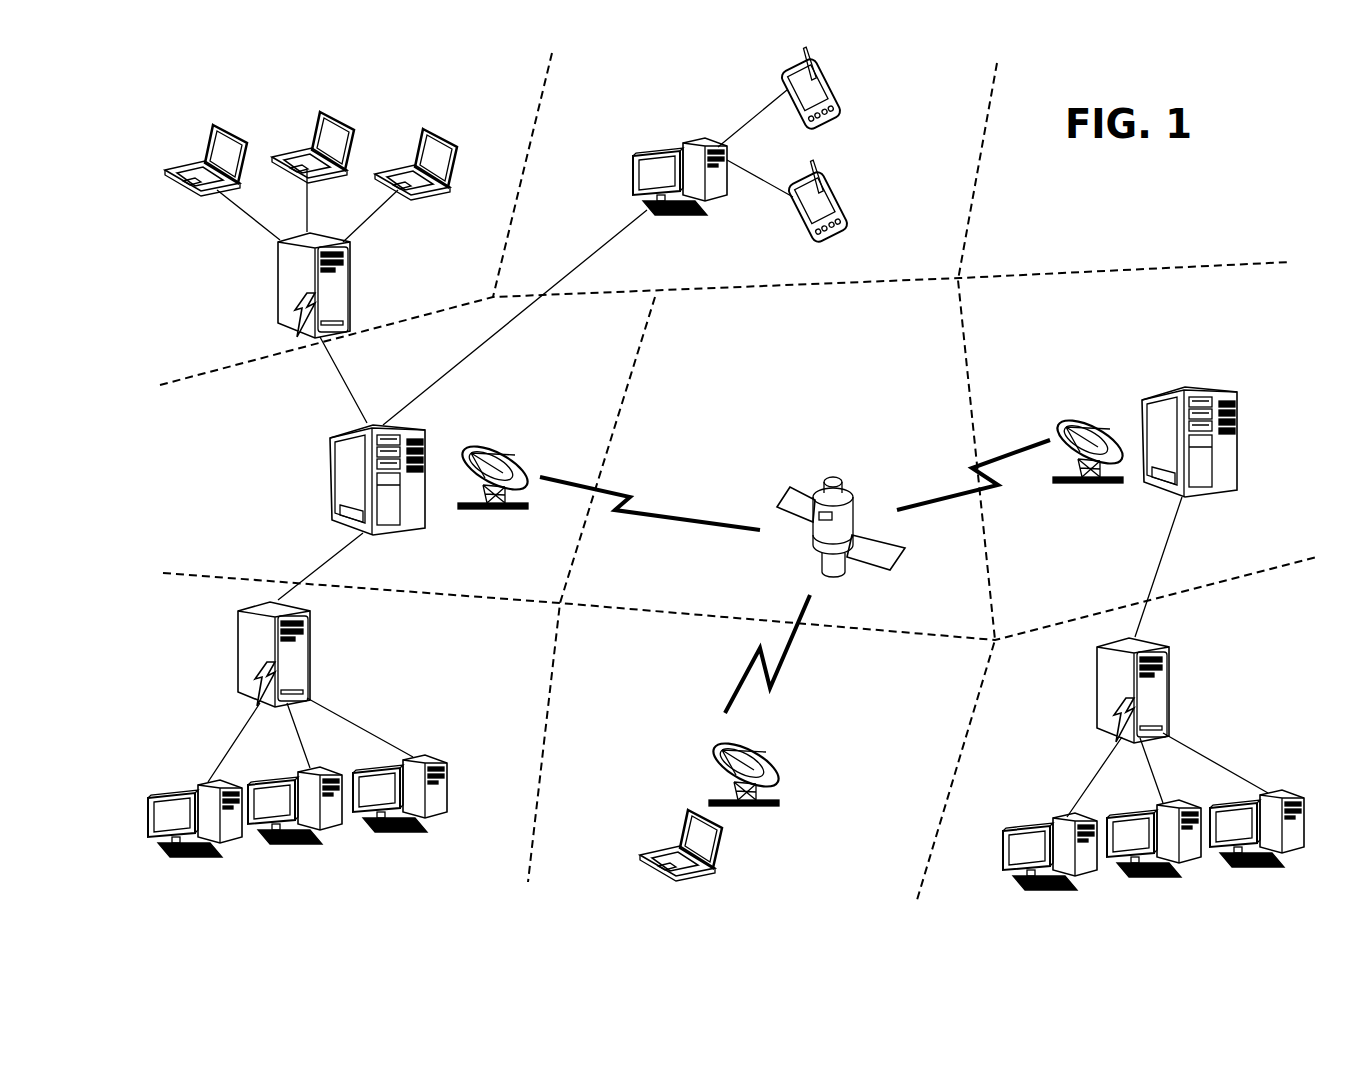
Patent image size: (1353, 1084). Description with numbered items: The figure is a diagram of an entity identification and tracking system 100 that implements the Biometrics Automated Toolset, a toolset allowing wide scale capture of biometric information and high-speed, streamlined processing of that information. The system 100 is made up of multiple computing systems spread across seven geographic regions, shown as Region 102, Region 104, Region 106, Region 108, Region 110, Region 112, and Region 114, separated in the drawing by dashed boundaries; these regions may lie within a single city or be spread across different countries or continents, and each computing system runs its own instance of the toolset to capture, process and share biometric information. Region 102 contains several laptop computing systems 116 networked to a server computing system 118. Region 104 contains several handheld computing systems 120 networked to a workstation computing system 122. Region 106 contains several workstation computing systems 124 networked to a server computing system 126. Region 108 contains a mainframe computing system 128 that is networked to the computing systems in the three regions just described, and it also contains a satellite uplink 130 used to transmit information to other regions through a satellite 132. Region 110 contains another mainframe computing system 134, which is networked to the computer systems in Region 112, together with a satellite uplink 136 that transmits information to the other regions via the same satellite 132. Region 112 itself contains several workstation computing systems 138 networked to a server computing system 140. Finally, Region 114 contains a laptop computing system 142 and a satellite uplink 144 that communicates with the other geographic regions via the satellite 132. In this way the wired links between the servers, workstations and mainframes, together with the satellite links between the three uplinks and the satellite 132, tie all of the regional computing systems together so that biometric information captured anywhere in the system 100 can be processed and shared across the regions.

The entity identification and tracking system 100 is at (1104, 243).
The region 102 is at (470, 103).
The region 104 is at (670, 101).
The region 106 is at (470, 716).
The region 108 is at (577, 398).
The region 110 is at (1082, 570).
The region 112 is at (1060, 768).
The region 114 is at (882, 745).
The laptop computing systems 116 is at (311, 139).
The server computing system 118 is at (360, 285).
The handheld computing systems 120 is at (864, 145).
The workstation computing system 122 is at (720, 205).
The workstation computing systems 124 is at (297, 821).
The server computing system 126 is at (317, 654).
The mainframe computing system 128 is at (306, 480).
The satellite uplink 130 is at (490, 513).
The satellite 132 is at (837, 512).
The mainframe computing system 134 is at (1219, 424).
The satellite uplink 136 is at (1085, 417).
The workstation computing systems 138 is at (1153, 860).
The server computing system 140 is at (1175, 690).
The laptop computing system 142 is at (745, 849).
The satellite uplink 144 is at (780, 787).